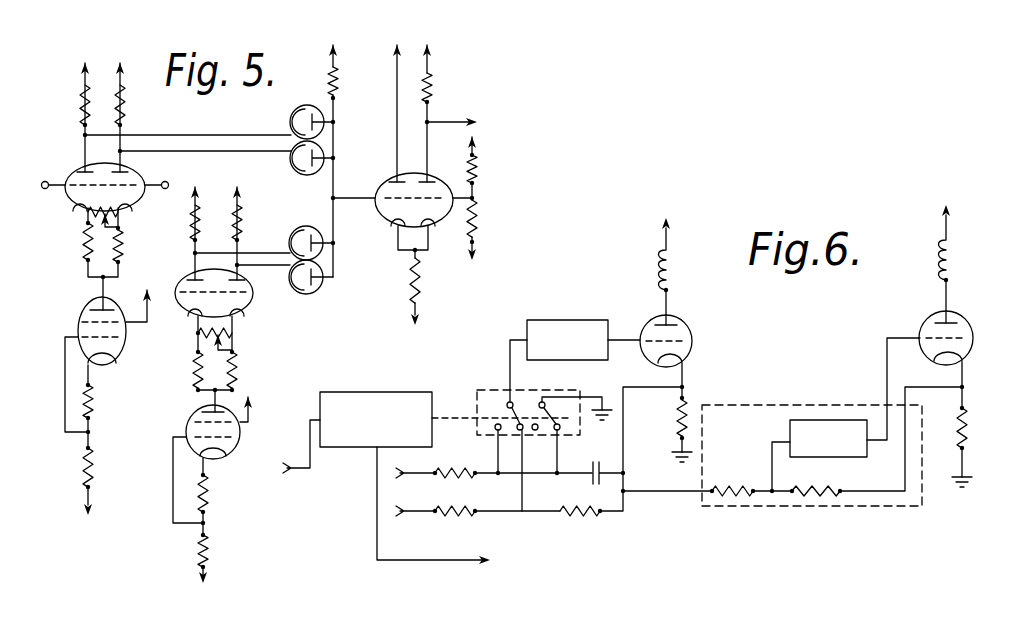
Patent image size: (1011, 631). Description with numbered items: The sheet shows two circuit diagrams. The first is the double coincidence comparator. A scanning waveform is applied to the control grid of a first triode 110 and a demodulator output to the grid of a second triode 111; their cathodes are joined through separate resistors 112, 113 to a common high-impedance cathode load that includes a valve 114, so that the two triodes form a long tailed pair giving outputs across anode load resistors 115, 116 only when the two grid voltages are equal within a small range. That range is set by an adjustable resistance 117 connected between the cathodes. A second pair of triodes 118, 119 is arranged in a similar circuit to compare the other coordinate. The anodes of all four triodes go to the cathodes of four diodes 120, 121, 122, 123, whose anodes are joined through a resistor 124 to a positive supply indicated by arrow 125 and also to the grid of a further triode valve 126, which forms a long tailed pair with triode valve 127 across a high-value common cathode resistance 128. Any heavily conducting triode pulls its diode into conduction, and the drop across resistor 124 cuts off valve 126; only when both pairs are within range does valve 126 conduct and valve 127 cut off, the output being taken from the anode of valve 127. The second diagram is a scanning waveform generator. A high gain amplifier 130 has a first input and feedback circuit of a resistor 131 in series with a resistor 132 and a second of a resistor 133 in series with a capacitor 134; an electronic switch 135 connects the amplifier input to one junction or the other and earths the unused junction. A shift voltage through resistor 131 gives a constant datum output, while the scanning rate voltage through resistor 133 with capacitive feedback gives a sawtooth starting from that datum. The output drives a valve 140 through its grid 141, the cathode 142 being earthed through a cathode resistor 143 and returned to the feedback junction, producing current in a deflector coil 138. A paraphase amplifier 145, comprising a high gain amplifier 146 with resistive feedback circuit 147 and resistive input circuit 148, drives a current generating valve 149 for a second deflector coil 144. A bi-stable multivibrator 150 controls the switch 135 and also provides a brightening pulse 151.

In FIG. 5, the first triode 110 is at (75, 167).
In FIG. 5, the second triode 111 is at (143, 170).
In FIG. 5, the cathode resistor 112 is at (88, 248).
In FIG. 5, the cathode resistor 113 is at (125, 238).
In FIG. 5, the valve 114 is at (125, 342).
In FIG. 5, the anode load resistor 115 is at (80, 113).
In FIG. 5, the anode load resistor 116 is at (124, 107).
In FIG. 5, the adjustable resistance 117 is at (112, 210).
In FIG. 5, the triode 118 is at (183, 272).
In FIG. 5, the triode 119 is at (240, 318).
In FIG. 5, the diode 120 is at (290, 120).
In FIG. 5, the diode 121 is at (290, 162).
In FIG. 5, the diode 122 is at (303, 227).
In FIG. 5, the diode 123 is at (300, 295).
In FIG. 5, the resistor 124 is at (338, 82).
In FIG. 5, the source of positive supply potential 125 is at (337, 52).
In FIG. 5, the triode valve 126 is at (385, 181).
In FIG. 5, the triode valve 127 is at (436, 226).
In FIG. 5, the common cathode resistance 128 is at (408, 290).
In FIG. 6, the high gain amplifier 130 is at (597, 320).
In FIG. 6, the resistor 131 is at (447, 517).
In FIG. 6, the resistor 132 is at (580, 514).
In FIG. 6, the resistor 133 is at (447, 470).
In FIG. 6, the capacitor 134 is at (597, 459).
In FIG. 6, the electronic switch 135 is at (490, 388).
In FIG. 6, the deflector coil 138 is at (668, 270).
In FIG. 6, the valve 140 is at (690, 327).
In FIG. 6, the grid 141 is at (692, 341).
In FIG. 6, the cathode 142 is at (685, 364).
In FIG. 6, the cathode resistor 143 is at (692, 412).
In FIG. 6, the second deflector coil 144 is at (945, 253).
In FIG. 6, the paraphase amplifier 145 is at (812, 402).
In FIG. 6, the high gain amplifier 146 is at (790, 423).
In FIG. 6, the resistive feedback circuit 147 is at (837, 488).
In FIG. 6, the resistive input circuit 148 is at (752, 490).
In FIG. 6, the current generating valve 149 is at (932, 321).
In FIG. 6, the bi-stable multivibrator 150 is at (407, 390).
In FIG. 6, the brightening pulse 151 is at (456, 559).